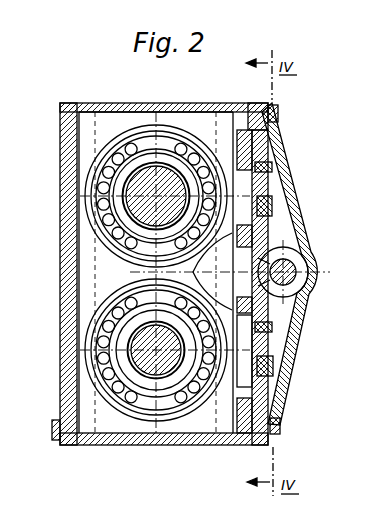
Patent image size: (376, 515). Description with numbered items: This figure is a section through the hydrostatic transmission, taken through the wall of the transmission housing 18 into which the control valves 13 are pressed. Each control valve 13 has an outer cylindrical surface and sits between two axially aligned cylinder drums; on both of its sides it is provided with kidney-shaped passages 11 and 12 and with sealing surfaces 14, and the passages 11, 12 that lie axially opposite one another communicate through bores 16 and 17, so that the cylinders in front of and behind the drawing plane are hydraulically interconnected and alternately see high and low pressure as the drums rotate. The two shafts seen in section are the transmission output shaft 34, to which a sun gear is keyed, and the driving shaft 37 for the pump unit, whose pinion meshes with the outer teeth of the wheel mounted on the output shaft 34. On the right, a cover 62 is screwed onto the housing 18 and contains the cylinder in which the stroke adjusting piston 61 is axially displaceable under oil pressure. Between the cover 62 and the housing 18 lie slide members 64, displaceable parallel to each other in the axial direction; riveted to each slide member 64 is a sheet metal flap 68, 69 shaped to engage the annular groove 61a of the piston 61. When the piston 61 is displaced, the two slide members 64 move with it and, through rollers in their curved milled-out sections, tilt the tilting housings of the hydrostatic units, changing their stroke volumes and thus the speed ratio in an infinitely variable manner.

The kidney-shaped passage 11 is at (115, 147).
The kidney-shaped passage 12 is at (214, 103).
The control valve 13 is at (163, 123).
The sealing surface 14 is at (152, 252).
The bore 16 is at (97, 176).
The bore 17 is at (258, 152).
The transmission housing 18 is at (137, 108).
The transmission output shaft 34 is at (150, 168).
The driving shaft for the pump unit 37 is at (157, 390).
The stroke adjusting piston 61 is at (296, 268).
The annular groove 61a is at (310, 286).
The cover 62 is at (292, 194).
The slide member 64 is at (256, 178).
The sheet metal flap 68 is at (272, 209).
The sheet metal flap 69 is at (262, 370).